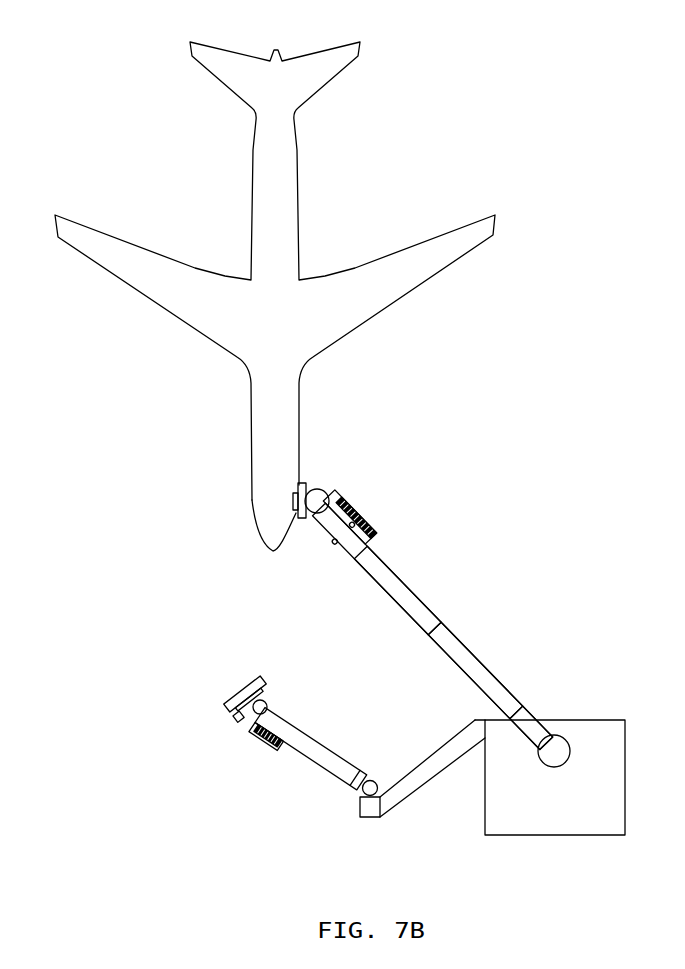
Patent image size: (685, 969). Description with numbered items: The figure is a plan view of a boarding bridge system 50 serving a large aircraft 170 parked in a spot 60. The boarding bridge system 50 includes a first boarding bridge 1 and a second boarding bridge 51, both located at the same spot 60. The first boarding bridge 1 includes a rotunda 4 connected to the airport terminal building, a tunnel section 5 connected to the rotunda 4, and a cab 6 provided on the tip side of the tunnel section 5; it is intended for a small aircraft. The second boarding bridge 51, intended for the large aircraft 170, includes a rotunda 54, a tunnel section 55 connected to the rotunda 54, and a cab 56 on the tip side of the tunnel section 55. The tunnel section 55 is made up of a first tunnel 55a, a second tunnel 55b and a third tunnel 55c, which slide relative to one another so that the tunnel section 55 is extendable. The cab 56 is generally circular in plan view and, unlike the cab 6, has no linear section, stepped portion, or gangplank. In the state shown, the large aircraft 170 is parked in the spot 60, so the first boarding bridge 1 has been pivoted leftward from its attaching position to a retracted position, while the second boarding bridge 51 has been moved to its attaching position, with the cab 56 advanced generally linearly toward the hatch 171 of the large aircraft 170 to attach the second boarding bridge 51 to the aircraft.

The large aircraft 170 is at (275, 296).
The hatch 171 is at (293, 500).
The cab 56 is at (317, 490).
The boarding bridge system 50 is at (488, 583).
The tunnel section 55 is at (435, 621).
The first tunnel 55a is at (531, 678).
The second tunnel 55b is at (467, 643).
The third tunnel 55c is at (416, 590).
The second boarding bridge 51 is at (416, 631).
The rotunda 54 is at (562, 750).
The spot 60 is at (193, 630).
The first boarding bridge 1 is at (310, 719).
The tunnel section 5 is at (310, 730).
The cab 6 is at (247, 693).
The rotunda 4 is at (372, 783).